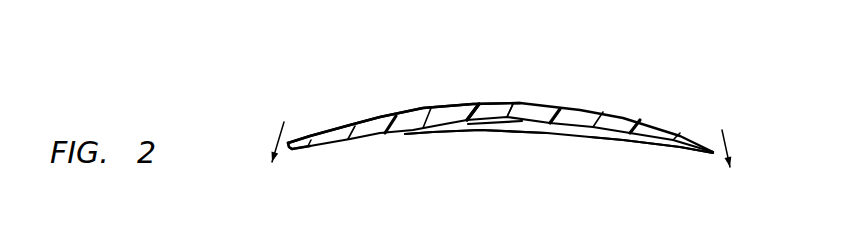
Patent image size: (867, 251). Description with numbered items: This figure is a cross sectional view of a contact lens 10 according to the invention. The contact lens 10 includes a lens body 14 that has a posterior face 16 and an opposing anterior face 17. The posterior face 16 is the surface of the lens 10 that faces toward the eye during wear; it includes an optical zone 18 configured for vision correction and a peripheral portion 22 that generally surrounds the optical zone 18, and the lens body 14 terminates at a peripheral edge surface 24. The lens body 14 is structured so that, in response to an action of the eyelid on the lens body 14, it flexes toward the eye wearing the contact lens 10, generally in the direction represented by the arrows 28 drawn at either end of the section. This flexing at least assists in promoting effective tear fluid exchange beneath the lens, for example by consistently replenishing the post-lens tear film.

The contact lens 10 is at (662, 103).
The lens body 14 is at (352, 121).
The posterior face 16 is at (408, 140).
The anterior face 17 is at (491, 105).
The optical zone 18 is at (500, 124).
The peripheral portion 22 is at (612, 122).
The peripheral edge surface 24 is at (300, 149).
The arrows 28 is at (278, 131).